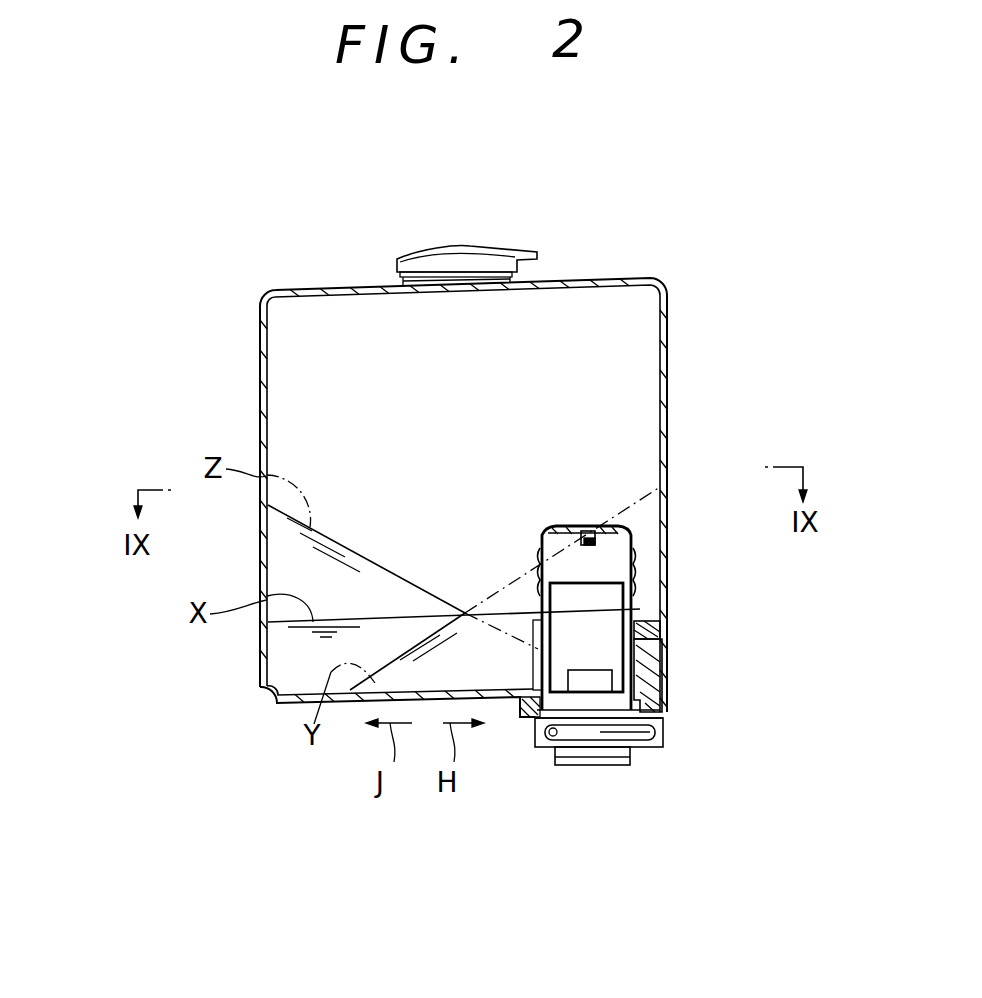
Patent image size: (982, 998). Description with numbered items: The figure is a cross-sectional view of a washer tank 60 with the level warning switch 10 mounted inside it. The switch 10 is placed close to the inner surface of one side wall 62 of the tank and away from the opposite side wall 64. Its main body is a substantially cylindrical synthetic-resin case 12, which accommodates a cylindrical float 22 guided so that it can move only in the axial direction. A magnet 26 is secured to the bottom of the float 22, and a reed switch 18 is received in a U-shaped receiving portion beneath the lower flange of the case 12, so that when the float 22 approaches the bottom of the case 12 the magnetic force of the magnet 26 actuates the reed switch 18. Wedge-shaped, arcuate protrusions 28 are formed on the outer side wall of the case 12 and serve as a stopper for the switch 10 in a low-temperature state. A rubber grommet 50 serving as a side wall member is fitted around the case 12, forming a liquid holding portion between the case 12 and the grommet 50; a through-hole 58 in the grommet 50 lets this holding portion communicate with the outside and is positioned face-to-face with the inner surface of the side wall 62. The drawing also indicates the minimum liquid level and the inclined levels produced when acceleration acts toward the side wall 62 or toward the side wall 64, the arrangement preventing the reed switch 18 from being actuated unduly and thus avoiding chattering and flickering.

The level warning switch 10 is at (519, 515).
The case 12 is at (632, 540).
The reed switch 18 is at (530, 742).
The float 22 is at (582, 583).
The magnet 26 is at (598, 680).
The protrusions 28 is at (540, 578).
The grommet 50 is at (672, 628).
The through-hole 58 is at (642, 644).
The washer tank 60 is at (600, 283).
The side wall 62 is at (668, 541).
The side wall 64 is at (260, 563).